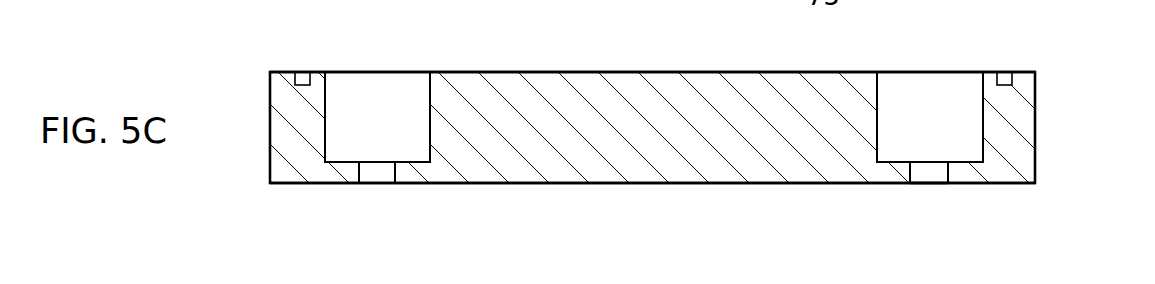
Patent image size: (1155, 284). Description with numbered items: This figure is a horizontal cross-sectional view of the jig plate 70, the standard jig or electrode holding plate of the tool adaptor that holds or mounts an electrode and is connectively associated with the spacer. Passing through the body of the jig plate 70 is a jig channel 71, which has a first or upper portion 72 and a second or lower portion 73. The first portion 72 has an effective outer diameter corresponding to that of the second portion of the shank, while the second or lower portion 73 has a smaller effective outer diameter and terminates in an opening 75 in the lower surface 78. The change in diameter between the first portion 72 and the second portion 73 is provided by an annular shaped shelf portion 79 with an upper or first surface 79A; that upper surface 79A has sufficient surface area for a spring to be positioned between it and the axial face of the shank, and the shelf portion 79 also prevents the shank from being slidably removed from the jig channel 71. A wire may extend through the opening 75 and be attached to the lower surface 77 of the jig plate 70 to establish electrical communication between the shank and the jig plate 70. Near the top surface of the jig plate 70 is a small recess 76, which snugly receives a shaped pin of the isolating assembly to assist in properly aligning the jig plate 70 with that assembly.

The jig plate 70 is at (1018, 141).
The jig channel 71 is at (388, 100).
The first portion 72 is at (325, 110).
The second portion 73 is at (358, 170).
The opening 75 is at (938, 183).
The recess 76 is at (298, 72).
The lower surface 77 is at (679, 72).
The lower surface 78 is at (758, 183).
The shelf portion 79 is at (405, 172).
The upper surface 79A is at (900, 162).